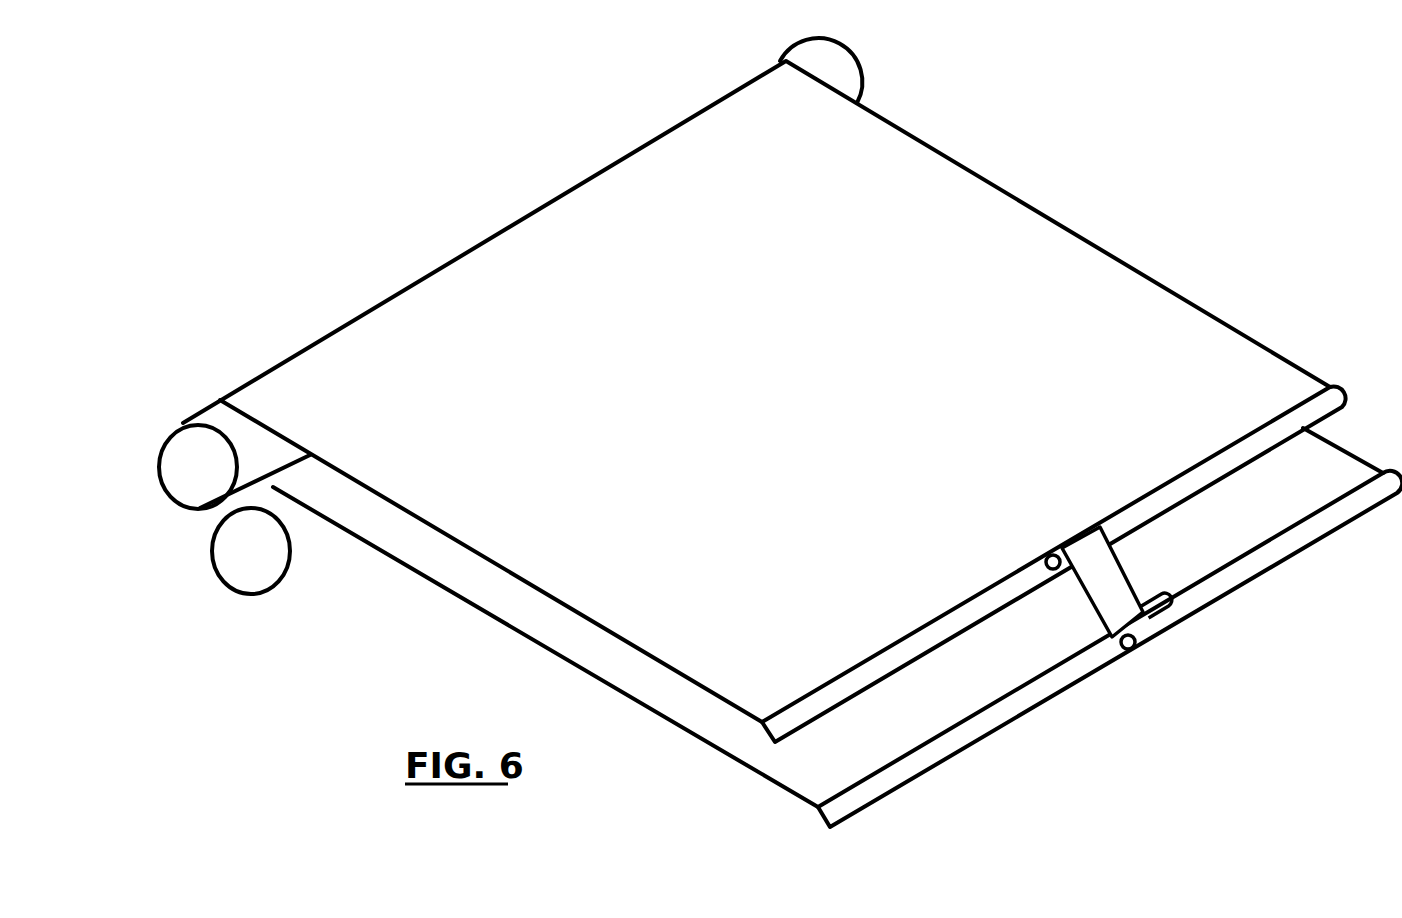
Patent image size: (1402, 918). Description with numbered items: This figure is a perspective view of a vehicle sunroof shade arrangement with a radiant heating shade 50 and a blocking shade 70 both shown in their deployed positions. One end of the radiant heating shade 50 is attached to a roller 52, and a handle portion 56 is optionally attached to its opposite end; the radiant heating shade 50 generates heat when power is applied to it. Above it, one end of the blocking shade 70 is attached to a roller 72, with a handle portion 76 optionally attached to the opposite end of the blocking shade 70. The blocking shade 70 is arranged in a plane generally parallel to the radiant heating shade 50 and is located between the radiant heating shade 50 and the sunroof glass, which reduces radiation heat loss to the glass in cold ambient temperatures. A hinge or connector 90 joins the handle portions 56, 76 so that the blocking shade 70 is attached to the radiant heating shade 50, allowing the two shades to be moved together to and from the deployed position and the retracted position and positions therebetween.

The radiant heating shade 50 is at (900, 738).
The roller 52 is at (210, 548).
The handle portion 56 is at (897, 790).
The blocking shade 70 is at (737, 489).
The roller 72 is at (157, 462).
The handle portion 76 is at (952, 640).
The hinge or connector 90 is at (1108, 596).